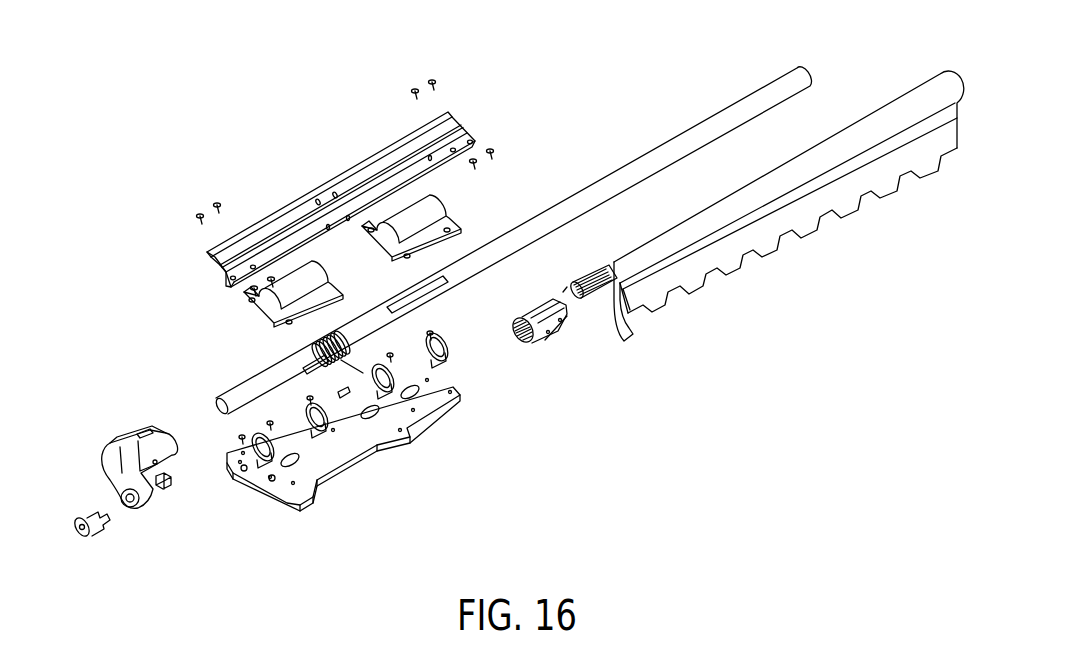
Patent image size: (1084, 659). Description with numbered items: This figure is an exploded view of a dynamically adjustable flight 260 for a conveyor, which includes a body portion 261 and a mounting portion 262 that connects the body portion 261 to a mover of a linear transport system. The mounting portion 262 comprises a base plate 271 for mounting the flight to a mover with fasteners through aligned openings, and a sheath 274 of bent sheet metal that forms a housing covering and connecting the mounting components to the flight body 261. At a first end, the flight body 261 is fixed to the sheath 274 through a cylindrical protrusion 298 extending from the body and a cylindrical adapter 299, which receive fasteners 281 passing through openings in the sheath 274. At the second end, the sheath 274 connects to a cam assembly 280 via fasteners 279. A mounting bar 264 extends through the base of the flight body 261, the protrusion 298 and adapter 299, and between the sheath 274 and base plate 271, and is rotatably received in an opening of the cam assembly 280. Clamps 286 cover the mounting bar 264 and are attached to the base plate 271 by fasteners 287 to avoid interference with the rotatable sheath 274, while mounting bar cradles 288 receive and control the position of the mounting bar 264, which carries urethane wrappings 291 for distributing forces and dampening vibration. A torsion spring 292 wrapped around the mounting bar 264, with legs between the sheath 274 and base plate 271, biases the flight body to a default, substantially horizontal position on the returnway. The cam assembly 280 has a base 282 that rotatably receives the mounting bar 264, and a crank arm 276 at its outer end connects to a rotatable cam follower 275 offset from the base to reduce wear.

The dynamically adjustable flight 260 is at (563, 437).
The body portion 261 is at (817, 157).
The mounting portion 262 is at (82, 432).
The mounting bar 264 is at (590, 183).
The base plate 271 is at (427, 403).
The sheath 274 is at (347, 170).
The cam follower 275 is at (85, 540).
The crank arm 276 is at (105, 470).
The fasteners 279 is at (202, 210).
The cam assembly 280 is at (162, 518).
The fasteners 281 is at (490, 148).
The base 282 is at (142, 432).
The clamps 286 is at (440, 200).
The fasteners 287 is at (402, 258).
The mounting bar cradles 288 is at (260, 457).
The wrappings 291 is at (403, 300).
The torsion spring 292 is at (331, 364).
The cylindrical protrusion 298 is at (595, 275).
The cylindrical adapter 299 is at (527, 343).